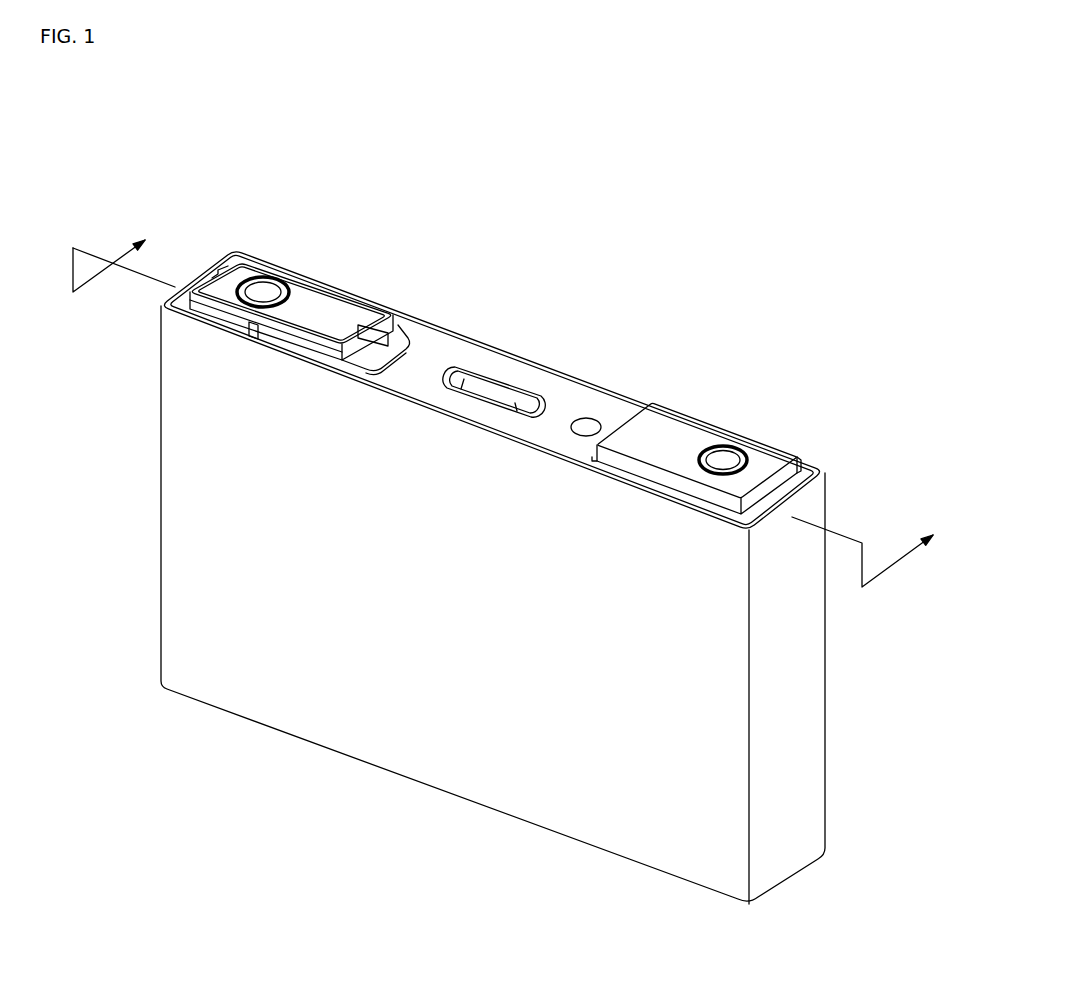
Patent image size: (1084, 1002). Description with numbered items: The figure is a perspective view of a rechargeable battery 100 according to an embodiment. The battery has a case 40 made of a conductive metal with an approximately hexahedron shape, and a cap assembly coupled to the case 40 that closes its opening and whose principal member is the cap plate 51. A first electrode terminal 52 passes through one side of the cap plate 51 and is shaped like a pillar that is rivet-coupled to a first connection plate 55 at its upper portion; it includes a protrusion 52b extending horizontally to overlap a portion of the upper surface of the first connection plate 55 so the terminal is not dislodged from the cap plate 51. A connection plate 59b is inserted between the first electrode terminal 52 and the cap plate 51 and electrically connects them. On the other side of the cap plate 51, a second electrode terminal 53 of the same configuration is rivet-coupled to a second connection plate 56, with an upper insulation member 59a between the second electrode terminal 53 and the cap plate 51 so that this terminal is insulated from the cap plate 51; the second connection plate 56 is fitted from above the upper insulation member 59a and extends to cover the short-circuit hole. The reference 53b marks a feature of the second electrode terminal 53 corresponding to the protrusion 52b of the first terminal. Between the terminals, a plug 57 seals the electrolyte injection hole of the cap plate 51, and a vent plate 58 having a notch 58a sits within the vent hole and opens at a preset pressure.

The rechargeable battery 100 is at (209, 168).
The case 40 is at (440, 751).
The cap plate 51 is at (570, 395).
The first electrode terminal 52 is at (724, 458).
The protrusion 52b is at (745, 455).
The second electrode terminal 53 is at (253, 294).
The first terminal plate 53b is at (279, 283).
The first connection plate 55 is at (679, 423).
The second connection plate 56 is at (333, 303).
The plug 57 is at (589, 424).
The vent plate 58 is at (507, 395).
The notch 58a is at (478, 388).
The upper insulation member 59a is at (410, 320).
The connection plate 59b is at (794, 465).